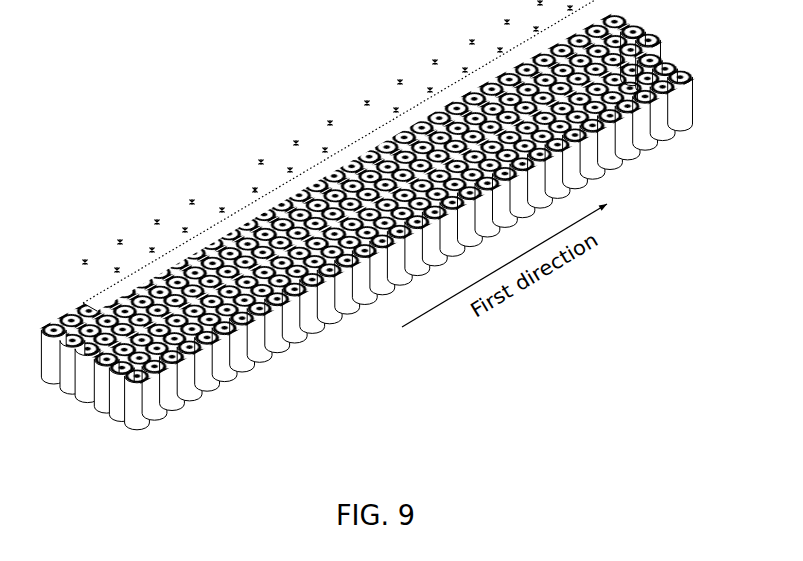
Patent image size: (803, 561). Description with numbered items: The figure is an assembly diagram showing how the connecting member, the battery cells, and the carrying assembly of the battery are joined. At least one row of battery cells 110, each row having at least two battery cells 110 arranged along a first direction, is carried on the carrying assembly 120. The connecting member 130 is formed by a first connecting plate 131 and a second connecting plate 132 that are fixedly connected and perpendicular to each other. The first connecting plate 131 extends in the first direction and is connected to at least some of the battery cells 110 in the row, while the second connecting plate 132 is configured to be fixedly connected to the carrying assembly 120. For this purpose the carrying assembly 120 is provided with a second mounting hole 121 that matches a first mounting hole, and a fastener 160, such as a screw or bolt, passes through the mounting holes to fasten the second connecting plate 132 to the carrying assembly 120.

The battery cell 110 is at (402, 243).
The carrying assembly 120 is at (173, 258).
The second mounting hole 121 is at (367, 140).
The connecting member 130 is at (356, 185).
The first connecting plate 131 is at (107, 377).
The second connecting plate 132 is at (303, 265).
The fastener 160 is at (223, 180).